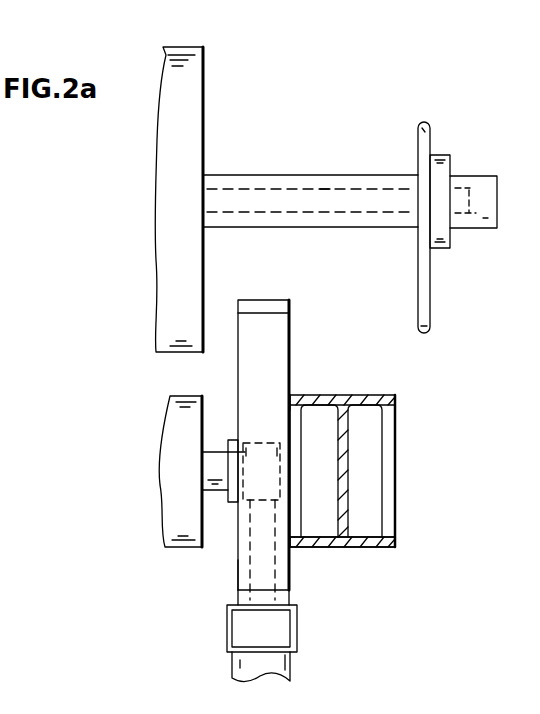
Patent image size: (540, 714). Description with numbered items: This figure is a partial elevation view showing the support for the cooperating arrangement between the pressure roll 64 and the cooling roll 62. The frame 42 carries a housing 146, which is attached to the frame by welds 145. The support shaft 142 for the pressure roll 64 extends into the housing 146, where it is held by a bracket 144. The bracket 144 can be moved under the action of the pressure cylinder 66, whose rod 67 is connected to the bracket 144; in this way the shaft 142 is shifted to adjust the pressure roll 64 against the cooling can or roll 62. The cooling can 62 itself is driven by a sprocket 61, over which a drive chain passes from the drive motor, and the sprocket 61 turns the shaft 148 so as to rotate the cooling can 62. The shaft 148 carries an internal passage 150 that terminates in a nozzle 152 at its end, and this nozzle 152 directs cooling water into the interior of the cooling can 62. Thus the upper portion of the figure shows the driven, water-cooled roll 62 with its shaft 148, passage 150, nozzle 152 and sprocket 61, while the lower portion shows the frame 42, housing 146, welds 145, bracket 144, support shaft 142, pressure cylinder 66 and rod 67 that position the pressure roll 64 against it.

The cooling roll 62 is at (172, 181).
The shaft 148 is at (246, 184).
The passage 150 is at (318, 199).
The nozzle 152 is at (474, 212).
The sprocket 61 is at (421, 277).
The housing 146 is at (291, 318).
The welds 145 is at (292, 400).
The bracket 144 is at (273, 450).
The support shaft 142 is at (220, 428).
The pressure roll 64 is at (172, 445).
The rod 67 is at (260, 555).
The frame 42 is at (346, 548).
The pressure cylinder 66 is at (272, 663).